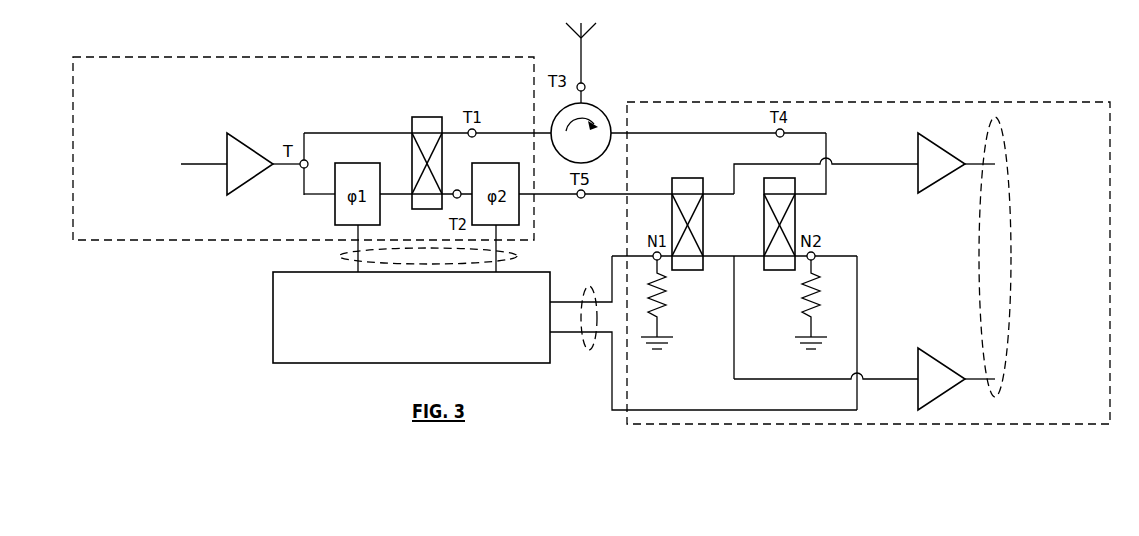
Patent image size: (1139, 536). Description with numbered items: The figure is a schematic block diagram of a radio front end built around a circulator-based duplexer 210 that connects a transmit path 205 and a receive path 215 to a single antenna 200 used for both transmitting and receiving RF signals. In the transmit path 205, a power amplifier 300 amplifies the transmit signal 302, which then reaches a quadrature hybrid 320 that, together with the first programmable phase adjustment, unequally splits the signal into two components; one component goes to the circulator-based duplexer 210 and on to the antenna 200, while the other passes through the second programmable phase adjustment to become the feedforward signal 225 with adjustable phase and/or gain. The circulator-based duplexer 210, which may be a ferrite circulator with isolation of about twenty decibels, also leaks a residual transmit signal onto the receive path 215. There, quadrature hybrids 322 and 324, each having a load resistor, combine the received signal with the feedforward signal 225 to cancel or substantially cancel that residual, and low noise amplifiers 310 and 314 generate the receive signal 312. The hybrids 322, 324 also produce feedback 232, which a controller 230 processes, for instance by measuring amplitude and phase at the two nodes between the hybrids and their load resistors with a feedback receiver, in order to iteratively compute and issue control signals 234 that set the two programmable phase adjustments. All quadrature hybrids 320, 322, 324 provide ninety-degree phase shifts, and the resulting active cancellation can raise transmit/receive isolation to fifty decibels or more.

The antenna 200 is at (604, 71).
The transmit path 205 is at (248, 120).
The circulator-based duplexer 210 is at (581, 133).
The receive path 215 is at (1095, 375).
The feedforward signal 225 is at (610, 198).
The controller 230 is at (411, 317).
The feedback 232 is at (589, 352).
The control signals 234 is at (340, 253).
The power amplifier 300 is at (250, 164).
The transmit signal 302 is at (161, 166).
The low noise amplifier 310 is at (956, 163).
The receive signal 312 is at (1036, 257).
The low noise amplifier 314 is at (956, 379).
The quadrature hybrid 320 is at (426, 105).
The quadrature hybrid 322 is at (687, 170).
The quadrature hybrid 324 is at (818, 208).